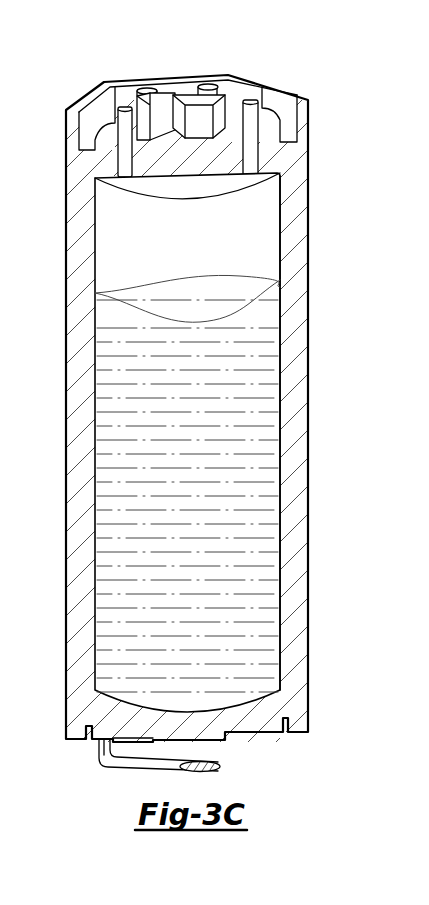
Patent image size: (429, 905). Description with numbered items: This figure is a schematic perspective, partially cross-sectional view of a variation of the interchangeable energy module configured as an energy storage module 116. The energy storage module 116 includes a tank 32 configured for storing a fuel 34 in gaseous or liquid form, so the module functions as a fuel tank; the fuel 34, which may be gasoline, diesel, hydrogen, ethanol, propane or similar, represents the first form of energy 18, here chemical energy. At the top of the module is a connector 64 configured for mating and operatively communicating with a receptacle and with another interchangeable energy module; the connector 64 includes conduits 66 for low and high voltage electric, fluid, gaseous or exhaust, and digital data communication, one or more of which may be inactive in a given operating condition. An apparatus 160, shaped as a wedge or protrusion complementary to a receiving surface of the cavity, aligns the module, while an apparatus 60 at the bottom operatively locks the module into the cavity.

The energy storage module 116 is at (310, 383).
The connector 64 is at (217, 70).
The apparatus 160 is at (161, 102).
The conduit 66 is at (252, 102).
The fuel 34 is at (263, 507).
The tank 32 is at (280, 588).
The first form of energy 18 is at (198, 444).
The apparatus 60 is at (122, 766).